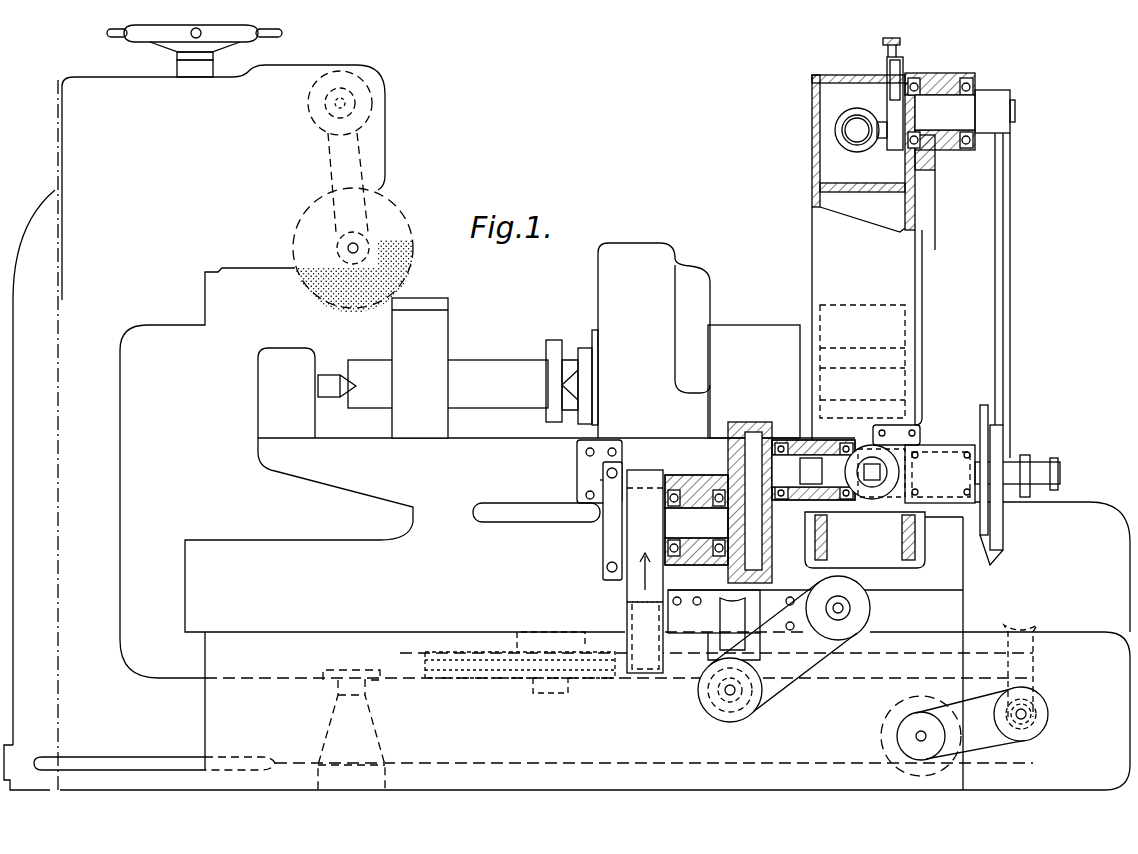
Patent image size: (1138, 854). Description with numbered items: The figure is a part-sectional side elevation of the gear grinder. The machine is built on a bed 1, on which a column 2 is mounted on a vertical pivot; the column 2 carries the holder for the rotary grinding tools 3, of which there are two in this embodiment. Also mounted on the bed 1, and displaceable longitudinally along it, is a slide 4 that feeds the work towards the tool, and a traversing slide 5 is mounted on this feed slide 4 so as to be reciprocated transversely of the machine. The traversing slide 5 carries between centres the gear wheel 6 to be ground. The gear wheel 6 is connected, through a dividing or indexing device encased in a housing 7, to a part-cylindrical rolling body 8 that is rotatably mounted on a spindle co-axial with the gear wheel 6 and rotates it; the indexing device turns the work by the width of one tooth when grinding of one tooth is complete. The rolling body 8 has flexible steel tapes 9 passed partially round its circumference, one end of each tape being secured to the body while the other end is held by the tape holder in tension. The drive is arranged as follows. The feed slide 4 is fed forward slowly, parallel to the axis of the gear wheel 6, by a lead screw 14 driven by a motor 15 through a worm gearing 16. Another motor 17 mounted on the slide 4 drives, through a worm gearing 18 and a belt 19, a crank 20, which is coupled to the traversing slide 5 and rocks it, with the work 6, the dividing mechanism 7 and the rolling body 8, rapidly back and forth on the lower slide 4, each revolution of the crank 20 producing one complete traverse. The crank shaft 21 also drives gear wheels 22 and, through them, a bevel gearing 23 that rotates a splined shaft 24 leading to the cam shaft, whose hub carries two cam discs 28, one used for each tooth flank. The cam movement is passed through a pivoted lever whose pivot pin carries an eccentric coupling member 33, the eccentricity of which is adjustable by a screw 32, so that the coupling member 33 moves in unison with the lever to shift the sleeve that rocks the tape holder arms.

The bed 1 is at (582, 711).
The column 2 is at (110, 347).
The rotary grinding tools 3 is at (412, 263).
The slide 4 is at (213, 548).
The traversing slide 5 is at (265, 453).
The gear wheel 6 is at (448, 368).
The housing 7 is at (606, 262).
The part-cylindrical rolling body 8 is at (897, 330).
The flexible steel tapes 9 is at (872, 305).
The lead screw 14 is at (595, 680).
The motor 15 is at (892, 732).
The worm gearing 16 is at (1035, 643).
The motor 17 is at (862, 600).
The worm gearing 18 is at (706, 712).
The belt 19 is at (638, 592).
The crank 20 is at (666, 478).
The crank shaft 21 is at (696, 520).
The gear wheels 22 is at (755, 455).
The bevel gearing 23 is at (858, 505).
The splined shaft 24 is at (878, 493).
The cam discs 28 is at (995, 548).
The screw 32 is at (903, 42).
The coupling member 33 is at (880, 145).